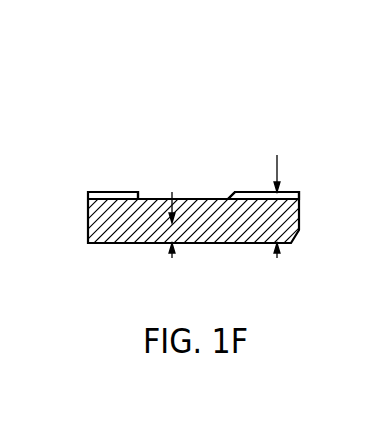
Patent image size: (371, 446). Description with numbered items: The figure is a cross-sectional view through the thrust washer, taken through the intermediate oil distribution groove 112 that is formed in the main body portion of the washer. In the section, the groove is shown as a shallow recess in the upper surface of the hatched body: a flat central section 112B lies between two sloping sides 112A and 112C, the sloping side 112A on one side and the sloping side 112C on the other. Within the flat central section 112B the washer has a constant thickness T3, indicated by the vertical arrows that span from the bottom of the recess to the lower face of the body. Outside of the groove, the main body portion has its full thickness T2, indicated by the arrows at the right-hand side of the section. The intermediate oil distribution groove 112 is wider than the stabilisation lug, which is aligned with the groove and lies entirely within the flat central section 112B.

The intermediate oil distribution groove 112 is at (305, 108).
The sloping side 112A is at (140, 192).
The flat central section 112B is at (193, 198).
The sloping side 112C is at (232, 192).
The thickness of flat central section T3 is at (172, 251).
The thickness of main body portion T2 is at (278, 233).